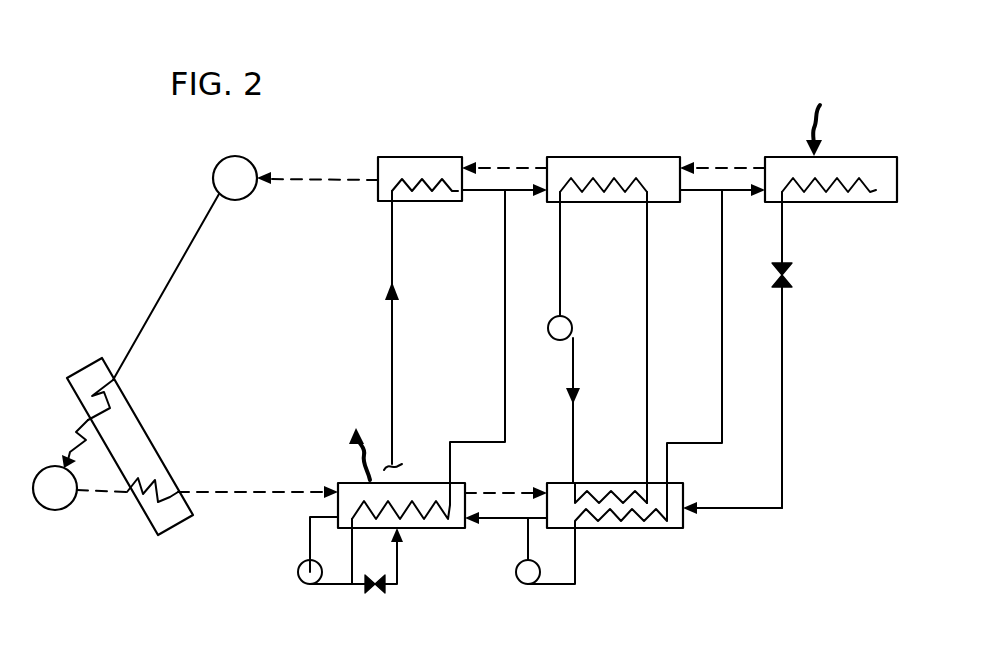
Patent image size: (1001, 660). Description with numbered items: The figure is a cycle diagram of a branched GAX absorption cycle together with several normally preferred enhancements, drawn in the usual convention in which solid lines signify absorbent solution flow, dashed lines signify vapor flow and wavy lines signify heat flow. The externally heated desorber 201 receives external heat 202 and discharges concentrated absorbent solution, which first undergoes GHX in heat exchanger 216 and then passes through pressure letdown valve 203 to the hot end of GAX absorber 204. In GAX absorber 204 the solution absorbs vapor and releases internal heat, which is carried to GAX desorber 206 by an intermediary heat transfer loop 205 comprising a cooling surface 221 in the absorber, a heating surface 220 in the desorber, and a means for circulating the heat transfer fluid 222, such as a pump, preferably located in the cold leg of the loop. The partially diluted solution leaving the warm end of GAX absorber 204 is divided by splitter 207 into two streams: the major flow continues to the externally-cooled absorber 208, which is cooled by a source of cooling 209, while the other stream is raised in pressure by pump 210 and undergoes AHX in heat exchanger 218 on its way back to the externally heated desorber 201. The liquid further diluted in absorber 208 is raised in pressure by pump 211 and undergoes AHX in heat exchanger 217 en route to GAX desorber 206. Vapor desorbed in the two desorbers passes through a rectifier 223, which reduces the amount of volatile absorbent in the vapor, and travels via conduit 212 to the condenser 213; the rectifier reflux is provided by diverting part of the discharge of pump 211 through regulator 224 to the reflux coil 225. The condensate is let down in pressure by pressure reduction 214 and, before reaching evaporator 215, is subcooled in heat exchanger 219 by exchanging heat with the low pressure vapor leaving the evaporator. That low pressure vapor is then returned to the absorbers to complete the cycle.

The externally heated desorber 201 is at (870, 202).
The external heat 202 is at (826, 119).
The pressure letdown valve 203 is at (794, 281).
The GAX absorber 204 is at (658, 528).
The intermediary heat transfer loop 205 is at (566, 284).
The GAX desorber 206 is at (614, 157).
The splitter 207 is at (520, 522).
The externally-cooled absorber 208 is at (338, 483).
The source of cooling 209 is at (356, 434).
The pump 210 is at (520, 586).
The pump 211 is at (298, 571).
The conduit 212 is at (320, 176).
The condenser 213 is at (213, 172).
The pressure reduction 214 is at (68, 432).
The evaporator 215 is at (54, 510).
The heat exchanger 216 is at (808, 200).
The heat exchanger 217 is at (426, 527).
The heat exchanger 218 is at (597, 528).
The heat exchanger 219 is at (148, 434).
The heating surface 220 is at (622, 200).
The cooling surface 221 is at (628, 483).
The means for circulating the heat transfer fluid 222 is at (573, 320).
The rectifier 223 is at (428, 157).
The regulator 224 is at (372, 588).
The reflux coil 225 is at (428, 200).